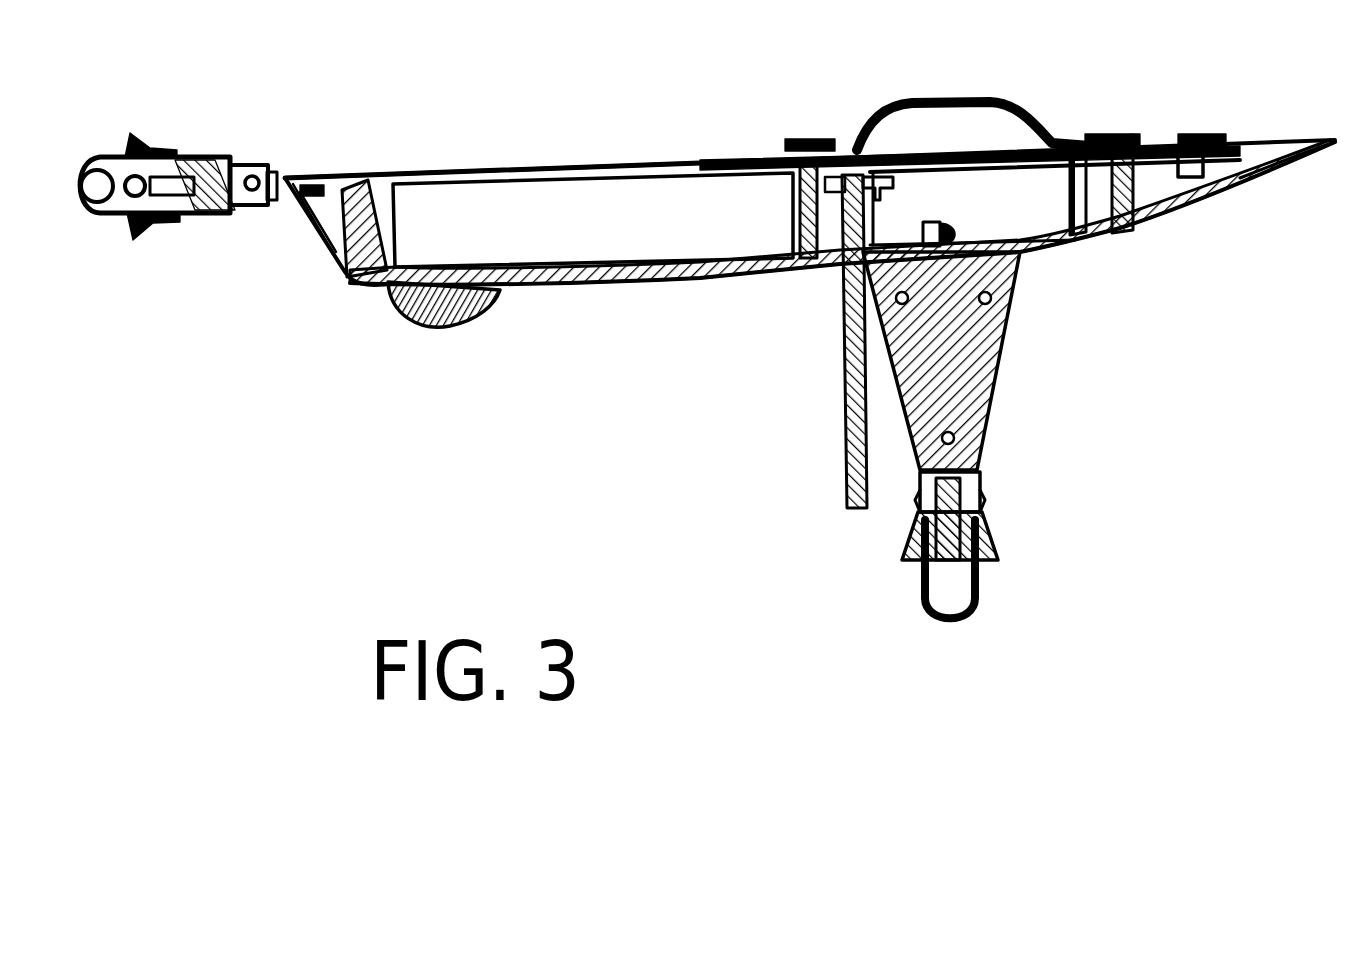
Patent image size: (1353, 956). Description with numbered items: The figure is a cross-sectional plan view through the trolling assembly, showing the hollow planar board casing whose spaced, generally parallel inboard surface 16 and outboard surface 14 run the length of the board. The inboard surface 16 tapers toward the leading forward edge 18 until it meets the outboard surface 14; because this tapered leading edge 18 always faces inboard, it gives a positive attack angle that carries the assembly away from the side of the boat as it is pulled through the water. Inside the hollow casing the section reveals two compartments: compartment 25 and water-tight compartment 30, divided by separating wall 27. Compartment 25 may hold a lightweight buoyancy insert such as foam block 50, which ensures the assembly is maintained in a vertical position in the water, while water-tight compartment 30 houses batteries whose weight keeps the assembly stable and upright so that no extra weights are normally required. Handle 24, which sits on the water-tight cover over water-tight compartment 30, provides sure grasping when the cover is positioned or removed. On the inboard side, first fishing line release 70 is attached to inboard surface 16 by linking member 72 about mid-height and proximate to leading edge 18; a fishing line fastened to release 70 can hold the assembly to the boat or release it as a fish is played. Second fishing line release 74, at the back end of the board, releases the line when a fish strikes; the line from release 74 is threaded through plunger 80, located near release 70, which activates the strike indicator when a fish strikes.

The outboard surface 14 is at (567, 165).
The inboard surface 16 is at (583, 280).
The leading forward edge 18 is at (1265, 196).
The handle 24 is at (915, 100).
The compartment 25 is at (383, 188).
The separating wall 27 is at (805, 140).
The water-tight compartment 30 is at (985, 183).
The foam block 50 is at (688, 240).
The first fishing line release 70 is at (985, 536).
The linking member 72 is at (1005, 367).
The second fishing line release 74 is at (195, 215).
The plunger 80 is at (840, 333).